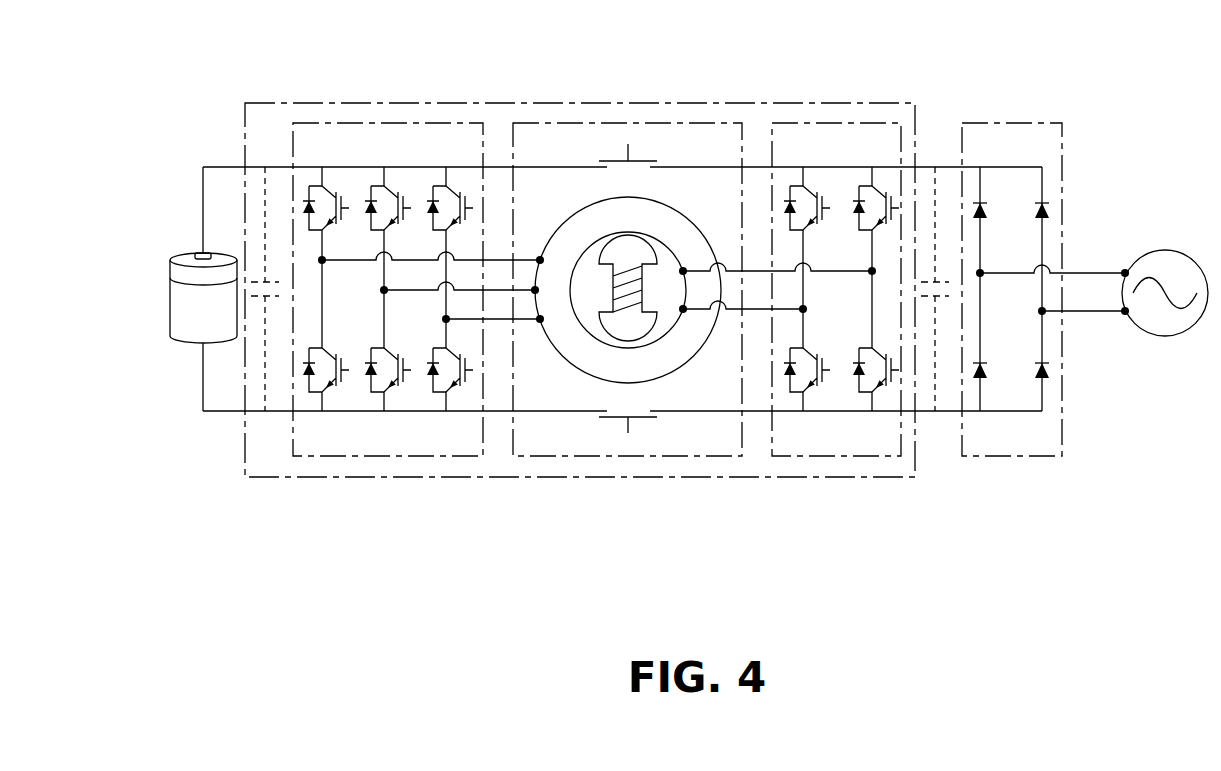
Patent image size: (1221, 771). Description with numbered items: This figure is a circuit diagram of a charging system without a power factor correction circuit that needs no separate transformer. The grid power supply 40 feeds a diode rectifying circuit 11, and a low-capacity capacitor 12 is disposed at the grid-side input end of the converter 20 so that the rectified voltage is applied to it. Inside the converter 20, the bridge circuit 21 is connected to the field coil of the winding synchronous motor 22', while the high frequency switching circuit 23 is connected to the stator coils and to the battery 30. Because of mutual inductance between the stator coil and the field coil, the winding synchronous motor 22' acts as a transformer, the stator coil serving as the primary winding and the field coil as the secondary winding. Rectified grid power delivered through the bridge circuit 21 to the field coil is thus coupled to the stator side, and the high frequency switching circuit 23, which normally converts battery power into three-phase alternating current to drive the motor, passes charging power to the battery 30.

The rectifying circuit 11 is at (1036, 123).
The capacitor 12 is at (940, 282).
The converter 20 is at (538, 103).
The bridge circuit 21 is at (803, 123).
The winding synchronous motor 22' is at (692, 244).
The high frequency switching circuit 23 is at (390, 123).
The battery 30 is at (180, 311).
The grid power supply 40 is at (1163, 250).